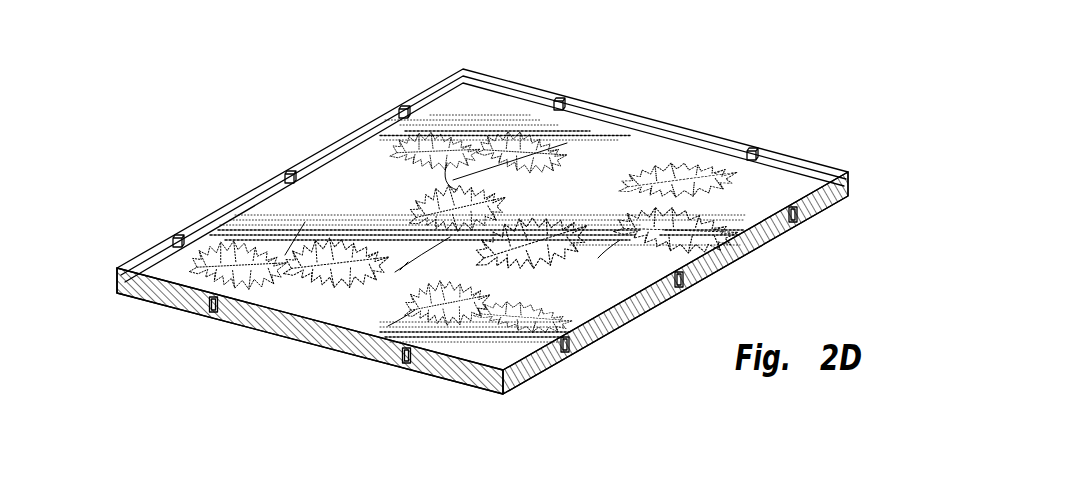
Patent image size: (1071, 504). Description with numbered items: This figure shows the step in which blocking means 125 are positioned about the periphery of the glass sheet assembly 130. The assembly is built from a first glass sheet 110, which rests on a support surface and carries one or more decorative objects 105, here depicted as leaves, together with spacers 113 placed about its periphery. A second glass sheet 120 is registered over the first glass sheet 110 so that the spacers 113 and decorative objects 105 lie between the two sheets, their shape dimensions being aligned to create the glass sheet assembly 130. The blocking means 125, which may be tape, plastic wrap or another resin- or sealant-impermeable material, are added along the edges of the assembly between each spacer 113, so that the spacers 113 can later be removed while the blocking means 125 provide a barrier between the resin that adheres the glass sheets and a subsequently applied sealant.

The decorative objects 105 is at (530, 140).
The first glass sheet 110 is at (280, 337).
The spacers 113 is at (750, 151).
The second glass sheet 120 is at (192, 224).
The blocking means 125 is at (190, 298).
The glass sheet assembly 130 is at (115, 267).